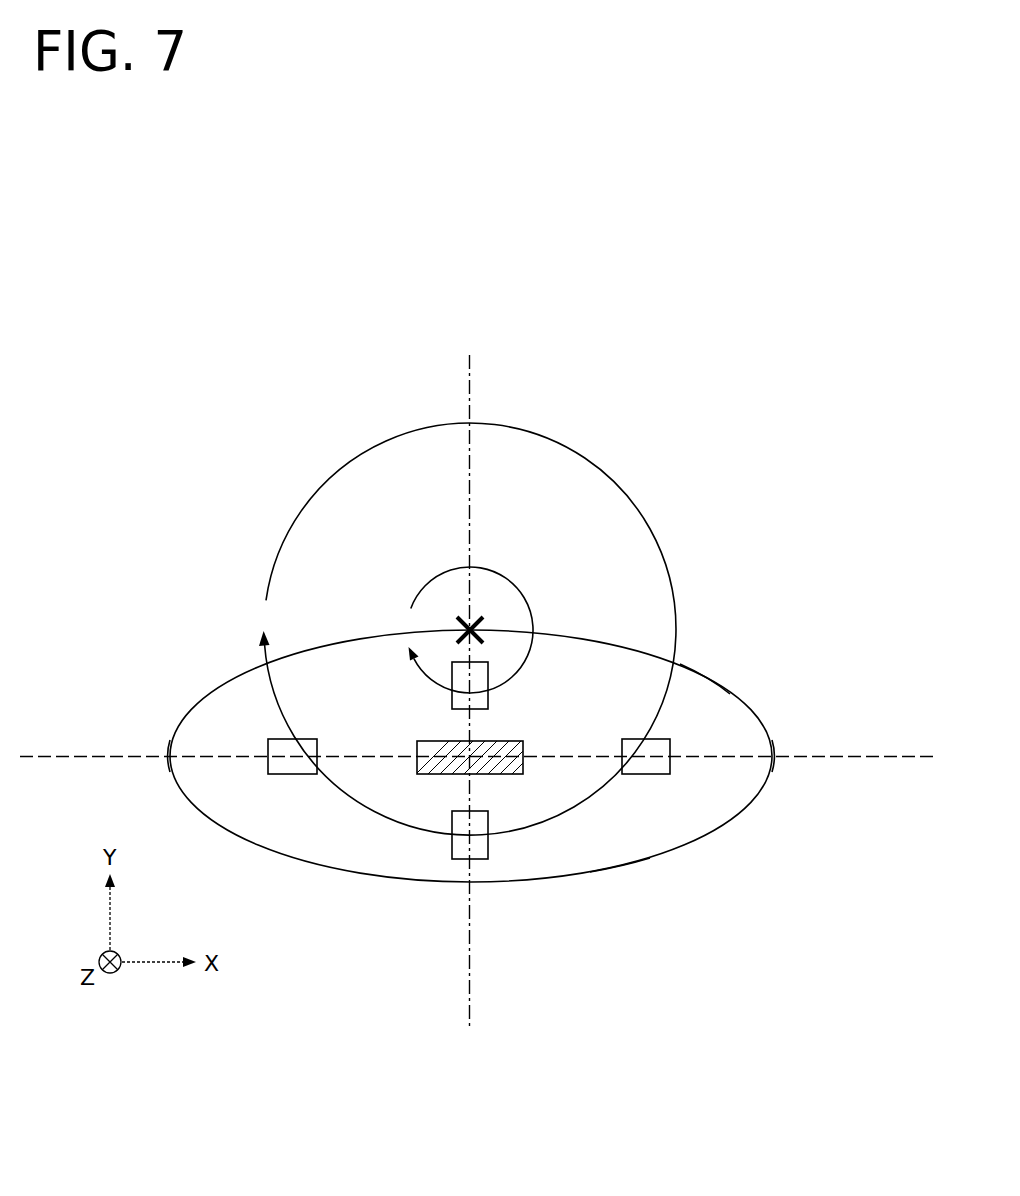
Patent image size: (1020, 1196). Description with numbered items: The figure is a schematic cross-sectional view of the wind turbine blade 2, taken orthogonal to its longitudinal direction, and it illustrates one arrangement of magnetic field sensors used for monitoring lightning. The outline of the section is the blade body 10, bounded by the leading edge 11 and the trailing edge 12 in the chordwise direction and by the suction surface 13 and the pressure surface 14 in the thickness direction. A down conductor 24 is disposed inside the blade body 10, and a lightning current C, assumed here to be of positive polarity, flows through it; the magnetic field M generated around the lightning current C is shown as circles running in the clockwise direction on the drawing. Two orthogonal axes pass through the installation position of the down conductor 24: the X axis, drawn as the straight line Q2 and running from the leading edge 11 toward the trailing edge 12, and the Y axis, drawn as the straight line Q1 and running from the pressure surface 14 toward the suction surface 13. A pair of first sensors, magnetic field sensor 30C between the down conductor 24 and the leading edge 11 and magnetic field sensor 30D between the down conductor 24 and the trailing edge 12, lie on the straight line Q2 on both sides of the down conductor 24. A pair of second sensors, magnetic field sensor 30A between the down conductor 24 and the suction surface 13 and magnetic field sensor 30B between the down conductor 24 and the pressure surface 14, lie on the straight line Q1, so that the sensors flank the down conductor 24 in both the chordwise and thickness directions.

The wind turbine blade 2 is at (724, 597).
The blade body 10 is at (252, 669).
The leading edge 11 is at (170, 756).
The trailing edge 12 is at (772, 756).
The suction surface 13 is at (707, 678).
The pressure surface 14 is at (620, 866).
The down conductor 24 is at (483, 775).
The magnetic field sensor 30A is at (488, 696).
The magnetic field sensor 30B is at (488, 846).
The magnetic field sensor 30C is at (292, 775).
The magnetic field sensor 30D is at (648, 775).
The magnetic field direction M is at (645, 521).
The lightning current C is at (455, 628).
The straight line (second axis) Q1 is at (478, 392).
The straight line (first axis) Q2 is at (880, 755).